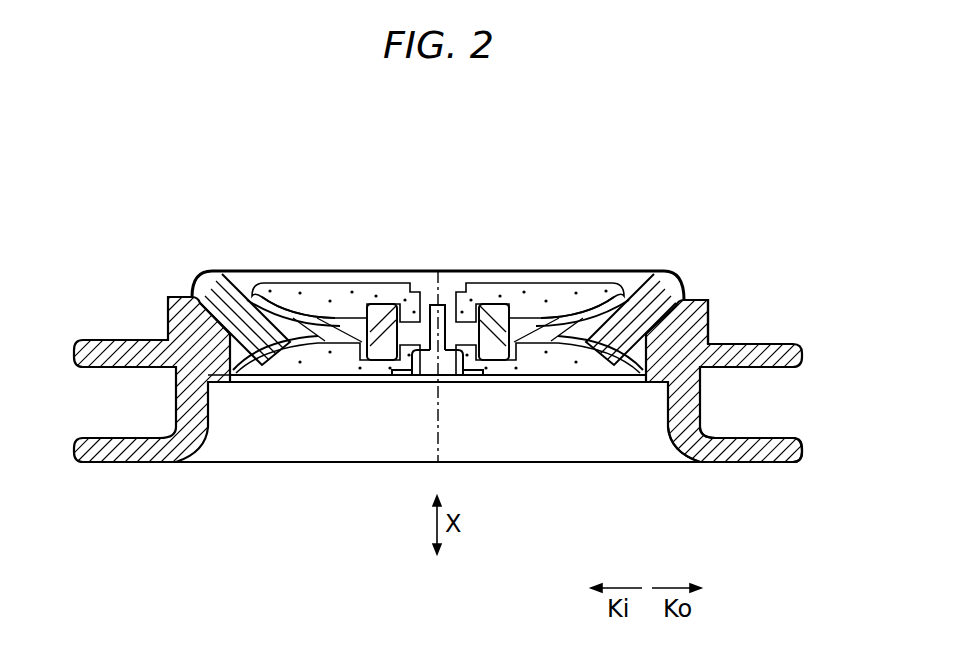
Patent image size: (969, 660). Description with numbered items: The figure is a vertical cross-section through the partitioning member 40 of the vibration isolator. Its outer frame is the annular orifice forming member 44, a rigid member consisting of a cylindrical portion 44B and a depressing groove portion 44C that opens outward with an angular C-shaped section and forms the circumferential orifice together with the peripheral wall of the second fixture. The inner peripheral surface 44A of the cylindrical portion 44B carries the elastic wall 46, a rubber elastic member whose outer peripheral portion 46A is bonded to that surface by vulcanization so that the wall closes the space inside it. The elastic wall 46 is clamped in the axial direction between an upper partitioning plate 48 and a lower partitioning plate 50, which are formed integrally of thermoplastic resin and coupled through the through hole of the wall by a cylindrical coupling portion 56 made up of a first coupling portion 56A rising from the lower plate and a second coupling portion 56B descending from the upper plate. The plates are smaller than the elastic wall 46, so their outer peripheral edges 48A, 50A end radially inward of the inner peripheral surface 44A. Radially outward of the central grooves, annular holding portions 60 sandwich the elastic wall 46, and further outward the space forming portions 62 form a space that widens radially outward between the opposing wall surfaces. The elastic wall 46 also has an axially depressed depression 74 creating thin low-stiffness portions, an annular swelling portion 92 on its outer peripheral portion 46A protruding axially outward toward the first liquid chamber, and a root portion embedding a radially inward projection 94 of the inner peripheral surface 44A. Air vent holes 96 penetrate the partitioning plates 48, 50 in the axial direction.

The partitioning member 40 is at (430, 204).
The orifice forming member 44 is at (770, 347).
The inner peripheral surface 44A is at (670, 428).
The cylindrical portion 44B is at (703, 318).
The depressing groove portion 44C is at (770, 437).
The elastic wall 46 is at (356, 270).
The outer peripheral portion 46A is at (242, 300).
The upper partitioning plate 48 is at (498, 293).
The outer peripheral edge 48A is at (633, 287).
The lower partitioning plate 50 is at (502, 380).
The outer peripheral edge 50A is at (628, 377).
The coupling portion 56 is at (437, 431).
The first coupling portion 56A is at (452, 340).
The second coupling portion 56B is at (465, 290).
The holding portion 60 is at (550, 305).
The space forming portion 62 is at (617, 285).
The depression 74 is at (304, 292).
The swelling portion 92 is at (210, 269).
The projection 94 is at (213, 380).
The air vent hole 96 is at (292, 372).